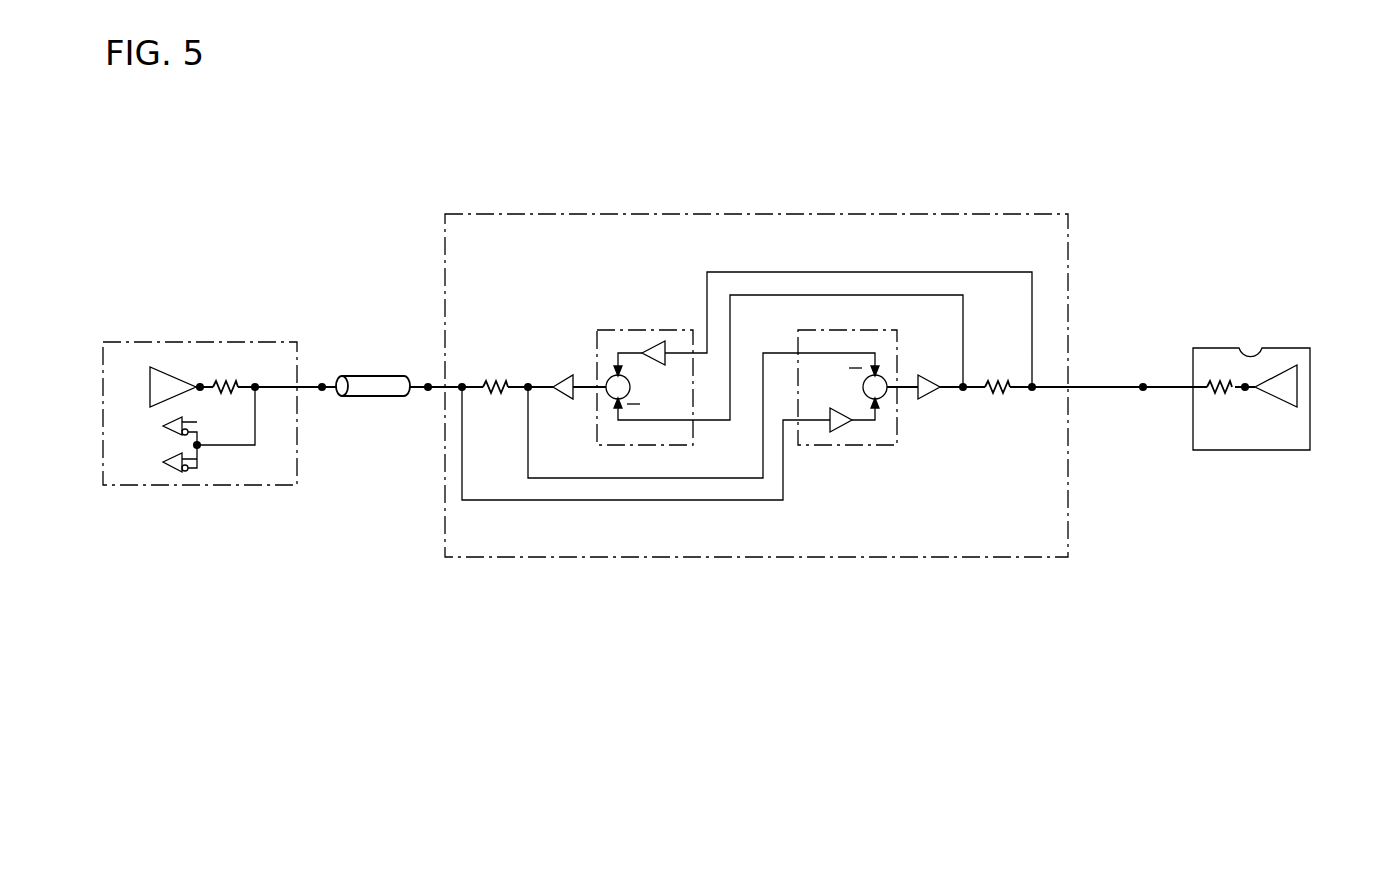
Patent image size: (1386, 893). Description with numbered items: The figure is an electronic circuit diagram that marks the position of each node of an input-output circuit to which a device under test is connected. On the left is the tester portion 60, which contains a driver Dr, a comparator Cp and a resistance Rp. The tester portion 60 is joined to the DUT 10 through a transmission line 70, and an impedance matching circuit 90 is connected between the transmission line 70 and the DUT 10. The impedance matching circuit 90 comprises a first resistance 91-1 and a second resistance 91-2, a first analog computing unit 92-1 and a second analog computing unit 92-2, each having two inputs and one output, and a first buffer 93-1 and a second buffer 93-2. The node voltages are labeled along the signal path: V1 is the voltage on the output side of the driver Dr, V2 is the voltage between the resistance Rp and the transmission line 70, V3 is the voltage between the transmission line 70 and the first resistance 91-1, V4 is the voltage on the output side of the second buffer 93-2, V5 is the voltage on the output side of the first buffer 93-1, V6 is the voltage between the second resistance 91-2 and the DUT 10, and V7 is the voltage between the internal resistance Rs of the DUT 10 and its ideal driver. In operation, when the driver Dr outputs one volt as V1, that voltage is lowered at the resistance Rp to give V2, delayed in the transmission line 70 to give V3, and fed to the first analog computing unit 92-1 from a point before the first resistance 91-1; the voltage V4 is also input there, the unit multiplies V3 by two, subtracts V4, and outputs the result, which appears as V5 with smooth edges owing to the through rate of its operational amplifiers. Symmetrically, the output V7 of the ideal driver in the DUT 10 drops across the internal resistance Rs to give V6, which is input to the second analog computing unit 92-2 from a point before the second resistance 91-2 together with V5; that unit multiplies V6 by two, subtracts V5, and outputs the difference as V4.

The DUT 10 is at (1289, 399).
The tester portion 60 is at (200, 448).
The transmission line 70 is at (352, 376).
The impedance matching circuit 90 is at (772, 214).
The first resistance Rtp 91-1 is at (493, 379).
The second resistance Rts 91-2 is at (1003, 398).
The first analog computing unit 92-1 is at (833, 446).
The second analog computing unit 92-2 is at (633, 330).
The first buffer 93-1 is at (922, 399).
The second buffer 93-2 is at (563, 400).
The voltage on the output side of the driver V1 is at (200, 387).
The voltage between the resistance Rp and the transmission line V2 is at (322, 387).
The voltage between the transmission line and the first resistance Rtp V3 is at (428, 387).
The voltage on the output side of the second buffer V4 is at (528, 387).
The voltage on the output side of the first buffer V5 is at (963, 390).
The voltage between the second resistance Rts and the DUT V6 is at (1143, 390).
The voltage between the internal resistance Rs of the DUT and an ideal driver V7 is at (1245, 390).
The driver Dr is at (156, 387).
The resistance Rp is at (224, 369).
The comparator Cp is at (194, 429).
The internal resistance Rs is at (1220, 371).